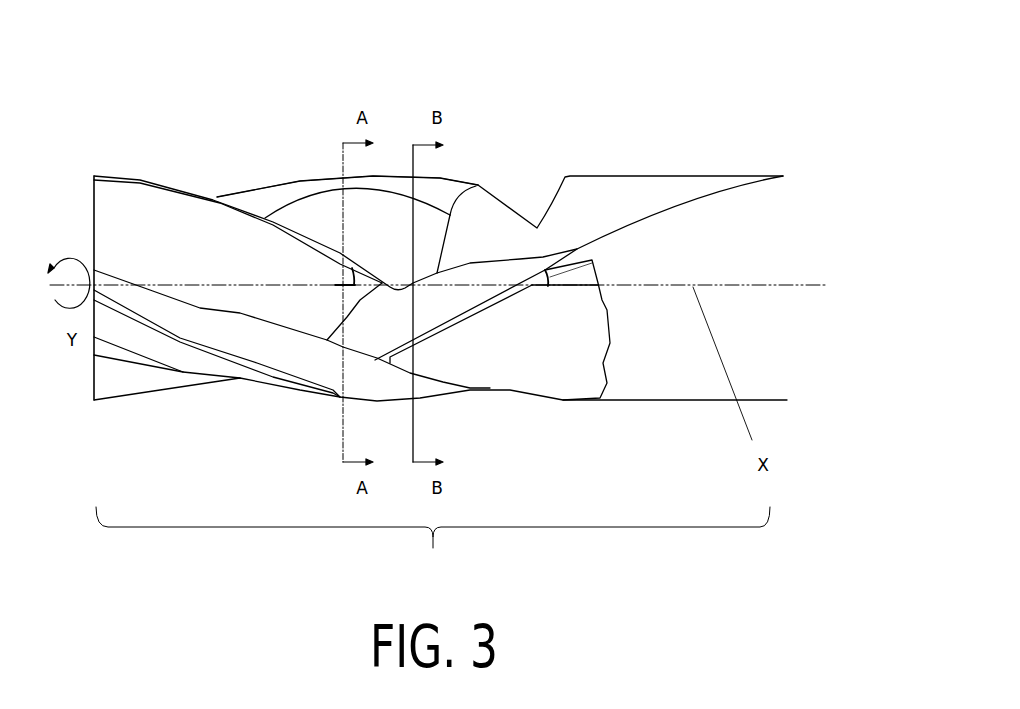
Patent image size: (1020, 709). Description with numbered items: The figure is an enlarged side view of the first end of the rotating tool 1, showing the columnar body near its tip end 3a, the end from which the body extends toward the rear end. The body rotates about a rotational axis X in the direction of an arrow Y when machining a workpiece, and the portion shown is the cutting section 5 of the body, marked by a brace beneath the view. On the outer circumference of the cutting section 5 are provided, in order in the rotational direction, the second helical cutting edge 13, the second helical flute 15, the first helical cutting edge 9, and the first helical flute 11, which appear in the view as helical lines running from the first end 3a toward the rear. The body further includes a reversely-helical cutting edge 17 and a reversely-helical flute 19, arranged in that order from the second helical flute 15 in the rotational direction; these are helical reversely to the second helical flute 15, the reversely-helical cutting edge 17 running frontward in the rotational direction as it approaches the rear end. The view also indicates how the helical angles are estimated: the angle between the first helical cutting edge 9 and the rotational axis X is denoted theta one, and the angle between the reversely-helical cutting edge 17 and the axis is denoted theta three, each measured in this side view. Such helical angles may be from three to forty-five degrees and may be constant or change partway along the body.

The rotating tool 1 is at (543, 108).
The first end 3a is at (95, 250).
The cutting section 5 is at (433, 548).
The first helical cutting edge 9 is at (170, 180).
The first helical flute 11 is at (289, 206).
The second helical cutting edge 13 is at (177, 337).
The second helical flute 15 is at (257, 350).
The reversely-helical cutting edge 17 is at (486, 303).
The reversely-helical flute 19 is at (443, 312).